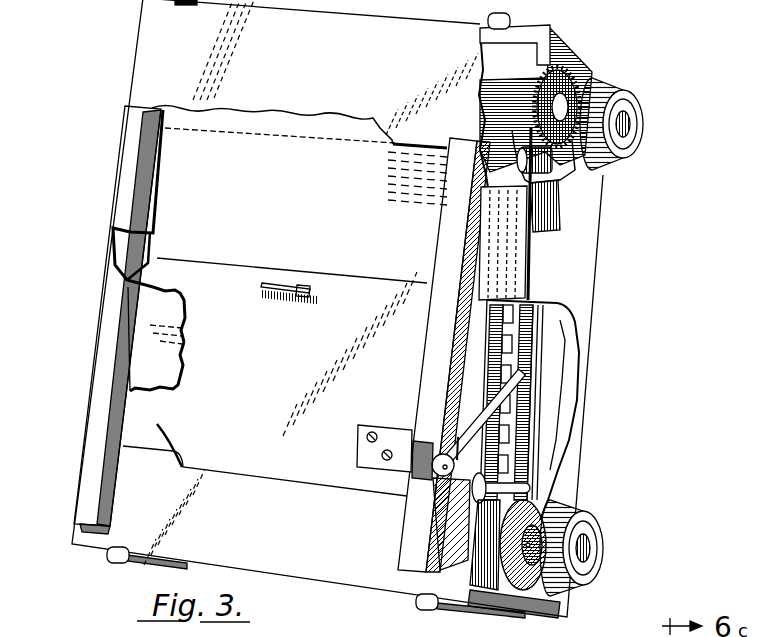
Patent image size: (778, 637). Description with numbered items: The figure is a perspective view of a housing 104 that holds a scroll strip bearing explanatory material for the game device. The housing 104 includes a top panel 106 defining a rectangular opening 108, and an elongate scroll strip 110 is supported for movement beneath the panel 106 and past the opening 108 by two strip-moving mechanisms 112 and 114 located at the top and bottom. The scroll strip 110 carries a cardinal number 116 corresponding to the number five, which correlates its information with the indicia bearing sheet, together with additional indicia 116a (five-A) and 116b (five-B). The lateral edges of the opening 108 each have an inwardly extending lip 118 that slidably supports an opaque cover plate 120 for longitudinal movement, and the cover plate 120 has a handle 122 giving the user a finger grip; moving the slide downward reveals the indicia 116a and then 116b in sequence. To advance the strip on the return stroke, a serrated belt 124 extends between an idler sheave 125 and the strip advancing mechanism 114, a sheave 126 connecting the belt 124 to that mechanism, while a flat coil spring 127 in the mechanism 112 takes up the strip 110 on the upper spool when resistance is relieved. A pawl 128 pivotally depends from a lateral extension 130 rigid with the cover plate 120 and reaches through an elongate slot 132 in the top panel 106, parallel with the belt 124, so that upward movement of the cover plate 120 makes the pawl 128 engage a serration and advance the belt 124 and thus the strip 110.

The housing 104 is at (125, 42).
The top panel 106 is at (300, 282).
The rectangular opening 108 is at (415, 148).
The scroll strip 110 is at (503, 97).
The strip-moving mechanism 112 is at (645, 126).
The strip-moving mechanism 114 is at (586, 506).
The cardinal number 116 is at (157, 249).
The indicia 116a is at (173, 301).
The indicia 116b is at (158, 357).
The lip 118 is at (123, 198).
The cover plate 120 is at (337, 354).
The handle 122 is at (311, 296).
The serrated chain or belt 124 is at (562, 299).
The idler sheave 125 is at (556, 202).
The sheave 126 is at (547, 515).
The flat coil spring 127 is at (575, 148).
The pawl 128 is at (435, 430).
The lateral extension 130 is at (366, 450).
The elongate slot 132 is at (489, 240).